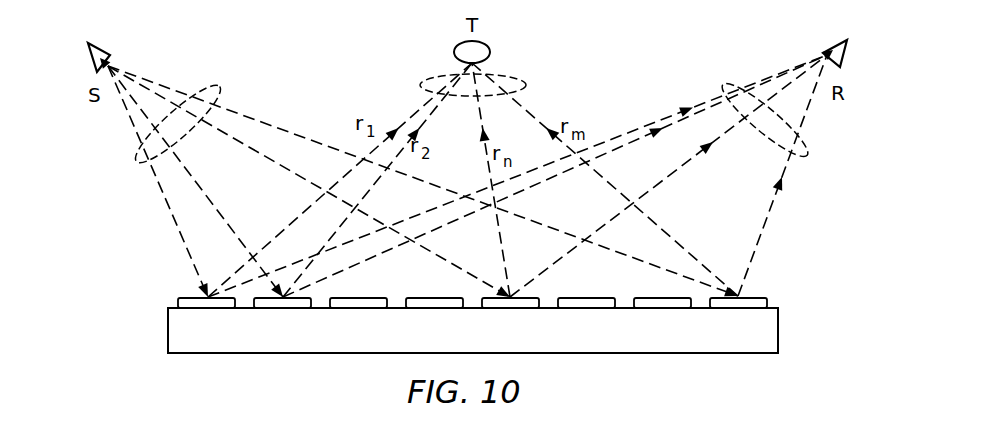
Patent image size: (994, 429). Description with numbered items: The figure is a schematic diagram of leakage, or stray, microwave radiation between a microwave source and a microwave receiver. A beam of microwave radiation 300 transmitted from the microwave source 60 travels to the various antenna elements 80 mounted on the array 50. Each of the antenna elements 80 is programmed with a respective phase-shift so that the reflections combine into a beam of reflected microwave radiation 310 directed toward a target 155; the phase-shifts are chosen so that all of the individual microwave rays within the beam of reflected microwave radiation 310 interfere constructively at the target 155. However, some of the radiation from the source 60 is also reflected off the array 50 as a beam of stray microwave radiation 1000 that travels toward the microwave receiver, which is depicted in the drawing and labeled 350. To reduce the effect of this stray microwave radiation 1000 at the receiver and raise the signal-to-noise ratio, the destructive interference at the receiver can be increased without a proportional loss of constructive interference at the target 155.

The microwave source 60 is at (93, 60).
The beam of microwave radiation 300 is at (140, 157).
The target 155 is at (490, 53).
The beam of reflected microwave radiation 310 is at (526, 85).
The receiver 350 is at (846, 52).
The beam of stray microwave radiation 1000 is at (805, 153).
The antenna elements 80 is at (768, 302).
The array 50 is at (778, 328).